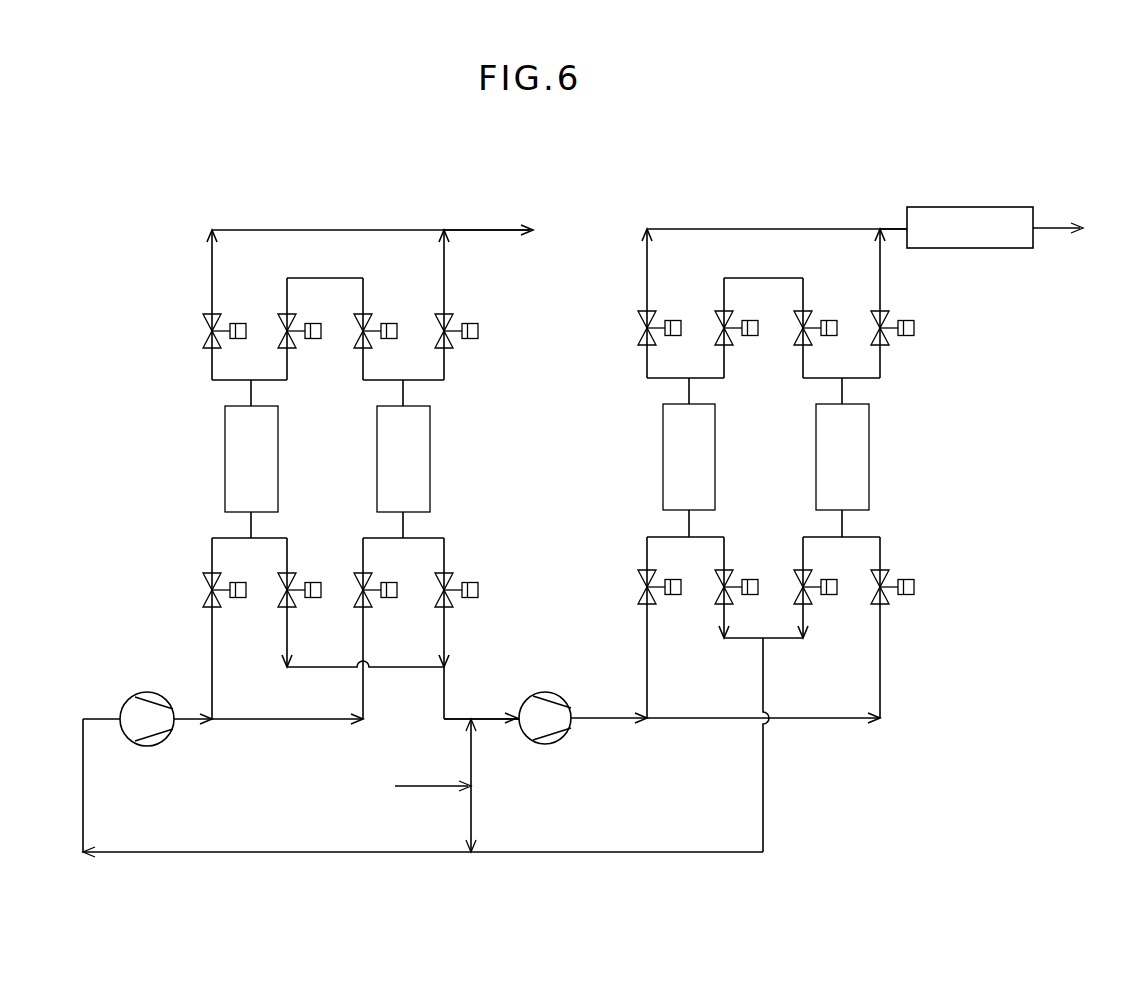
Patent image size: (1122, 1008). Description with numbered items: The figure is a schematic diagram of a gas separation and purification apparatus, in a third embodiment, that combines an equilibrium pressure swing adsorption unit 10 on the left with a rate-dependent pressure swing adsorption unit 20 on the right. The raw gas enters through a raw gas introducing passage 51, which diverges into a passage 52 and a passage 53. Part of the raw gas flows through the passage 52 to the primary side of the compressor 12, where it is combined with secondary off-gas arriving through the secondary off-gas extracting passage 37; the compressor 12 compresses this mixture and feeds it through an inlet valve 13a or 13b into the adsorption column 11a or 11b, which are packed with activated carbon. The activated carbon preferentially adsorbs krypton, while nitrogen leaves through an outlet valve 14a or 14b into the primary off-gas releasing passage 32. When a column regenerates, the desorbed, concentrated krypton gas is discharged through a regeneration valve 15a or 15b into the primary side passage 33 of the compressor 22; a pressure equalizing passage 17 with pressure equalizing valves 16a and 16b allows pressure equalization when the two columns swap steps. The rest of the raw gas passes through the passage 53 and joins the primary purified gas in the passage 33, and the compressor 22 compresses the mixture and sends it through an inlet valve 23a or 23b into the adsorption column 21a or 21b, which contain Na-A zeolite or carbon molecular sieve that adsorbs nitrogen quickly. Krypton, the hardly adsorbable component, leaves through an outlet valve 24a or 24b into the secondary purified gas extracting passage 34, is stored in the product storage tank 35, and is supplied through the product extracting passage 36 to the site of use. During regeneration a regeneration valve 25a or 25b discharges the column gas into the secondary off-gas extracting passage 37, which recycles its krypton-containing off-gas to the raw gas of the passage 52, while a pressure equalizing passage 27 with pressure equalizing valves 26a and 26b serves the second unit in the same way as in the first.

The equilibrium pressure swing adsorption unit 10 is at (158, 438).
The adsorption column 11a is at (225, 478).
The adsorption column 11b is at (430, 470).
The compressor 12 is at (143, 693).
The inlet valve 13a is at (204, 593).
The inlet valve 13b is at (357, 597).
The outlet valve 14a is at (204, 333).
The outlet valve 14b is at (452, 327).
The regeneration valve 15a is at (281, 597).
The regeneration valve 15b is at (455, 597).
The pressure equalizing valve 16a is at (281, 328).
The pressure equalizing valve 16b is at (369, 326).
The pressure equalizing passage 17 is at (325, 278).
The rate-dependent pressure swing adsorption unit 20 is at (965, 450).
The adsorption column 21a is at (663, 436).
The adsorption column 21b is at (869, 430).
The compressor 22 is at (553, 742).
The inlet valve 23a is at (638, 590).
The inlet valve 23b is at (890, 597).
The outlet valve 24a is at (638, 330).
The outlet valve 24b is at (890, 325).
The regeneration valve 25a is at (718, 597).
The regeneration valve 25b is at (795, 595).
The pressure equalizing valve 26a is at (715, 326).
The pressure equalizing valve 26b is at (810, 323).
The pressure equalizing passage 27 is at (762, 278).
The primary off-gas releasing passage 32 is at (494, 228).
The primary side passage 33 is at (486, 715).
The secondary purified gas extracting passage 34 is at (893, 225).
The product storage tank 35 is at (987, 207).
The product extracting passage 36 is at (1050, 225).
The secondary off-gas extracting passage 37 is at (766, 812).
The raw gas introducing passage 51 is at (417, 790).
The passage 52 is at (474, 815).
The passage 53 is at (468, 757).